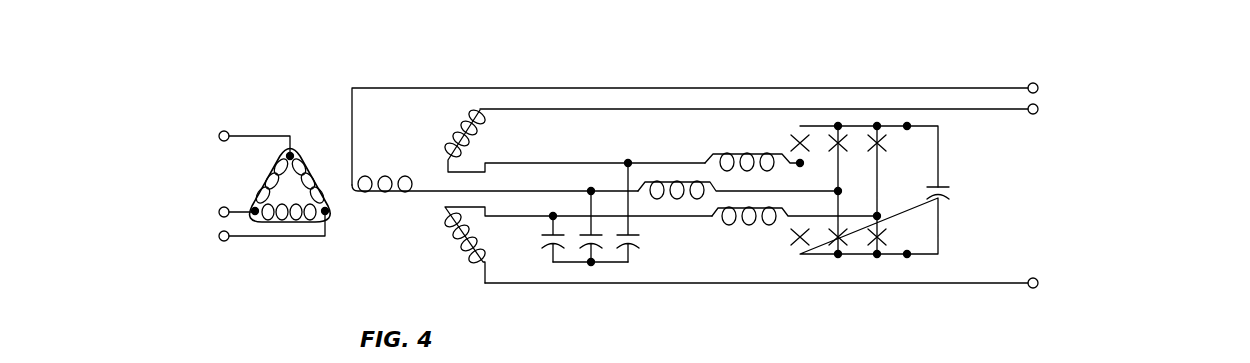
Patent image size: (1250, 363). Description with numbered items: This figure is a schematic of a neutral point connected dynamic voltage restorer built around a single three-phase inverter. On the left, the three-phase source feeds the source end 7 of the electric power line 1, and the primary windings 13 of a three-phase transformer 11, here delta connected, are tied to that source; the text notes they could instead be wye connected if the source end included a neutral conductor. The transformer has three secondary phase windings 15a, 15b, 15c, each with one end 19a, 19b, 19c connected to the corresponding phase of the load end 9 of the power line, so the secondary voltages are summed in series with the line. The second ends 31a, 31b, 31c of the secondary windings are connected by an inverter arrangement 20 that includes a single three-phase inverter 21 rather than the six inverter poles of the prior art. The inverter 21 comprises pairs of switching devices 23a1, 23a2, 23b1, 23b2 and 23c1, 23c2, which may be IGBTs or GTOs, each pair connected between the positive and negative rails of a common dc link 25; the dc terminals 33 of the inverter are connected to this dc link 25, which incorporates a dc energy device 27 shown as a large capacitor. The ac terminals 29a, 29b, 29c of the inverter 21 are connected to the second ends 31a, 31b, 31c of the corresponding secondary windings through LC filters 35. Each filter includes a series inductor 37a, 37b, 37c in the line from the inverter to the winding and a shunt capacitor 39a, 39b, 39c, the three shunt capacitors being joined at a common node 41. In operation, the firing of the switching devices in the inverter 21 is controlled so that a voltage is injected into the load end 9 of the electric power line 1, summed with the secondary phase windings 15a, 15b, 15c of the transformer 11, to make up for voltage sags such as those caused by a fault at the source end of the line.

The electric power line 1 is at (577, 67).
The source end 7 is at (255, 114).
The load end 9 is at (990, 62).
The three-phase transformer 11 is at (313, 120).
The primary windings 13 is at (285, 255).
The secondary phase winding 15a is at (388, 196).
The secondary phase winding 15b is at (456, 132).
The secondary phase winding 15c is at (466, 250).
The first end of secondary phase winding 19a is at (354, 165).
The first end of secondary phase winding 19b is at (490, 112).
The first end of secondary phase winding 19c is at (486, 262).
The inverter arrangement 20 is at (793, 72).
The three-phase inverter 21 is at (836, 268).
The switching device 23a1 is at (793, 143).
The switching device 23b1 is at (840, 140).
The switching device 23c1 is at (882, 140).
The switching device 23a2 is at (795, 241).
The switching device 23b2 is at (843, 240).
The switching device 23c2 is at (882, 243).
The dc link 25 is at (968, 158).
The dc energy device 27 is at (944, 199).
The ac terminal 29a is at (803, 163).
The ac terminal 29b is at (841, 192).
The ac terminal 29c is at (879, 216).
The second end of secondary phase winding 31a is at (417, 186).
The second end of secondary phase winding 31b is at (462, 162).
The second end of secondary phase winding 31c is at (452, 222).
The dc terminals 33 is at (908, 128).
The LC filter 35 is at (637, 128).
The series inductor 37a is at (715, 155).
The series inductor 37b is at (674, 199).
The series inductor 37c is at (748, 225).
The shunt capacitor 39a is at (641, 250).
The shunt capacitor 39b is at (600, 250).
The shunt capacitor 39c is at (548, 233).
The common node 41 is at (590, 266).